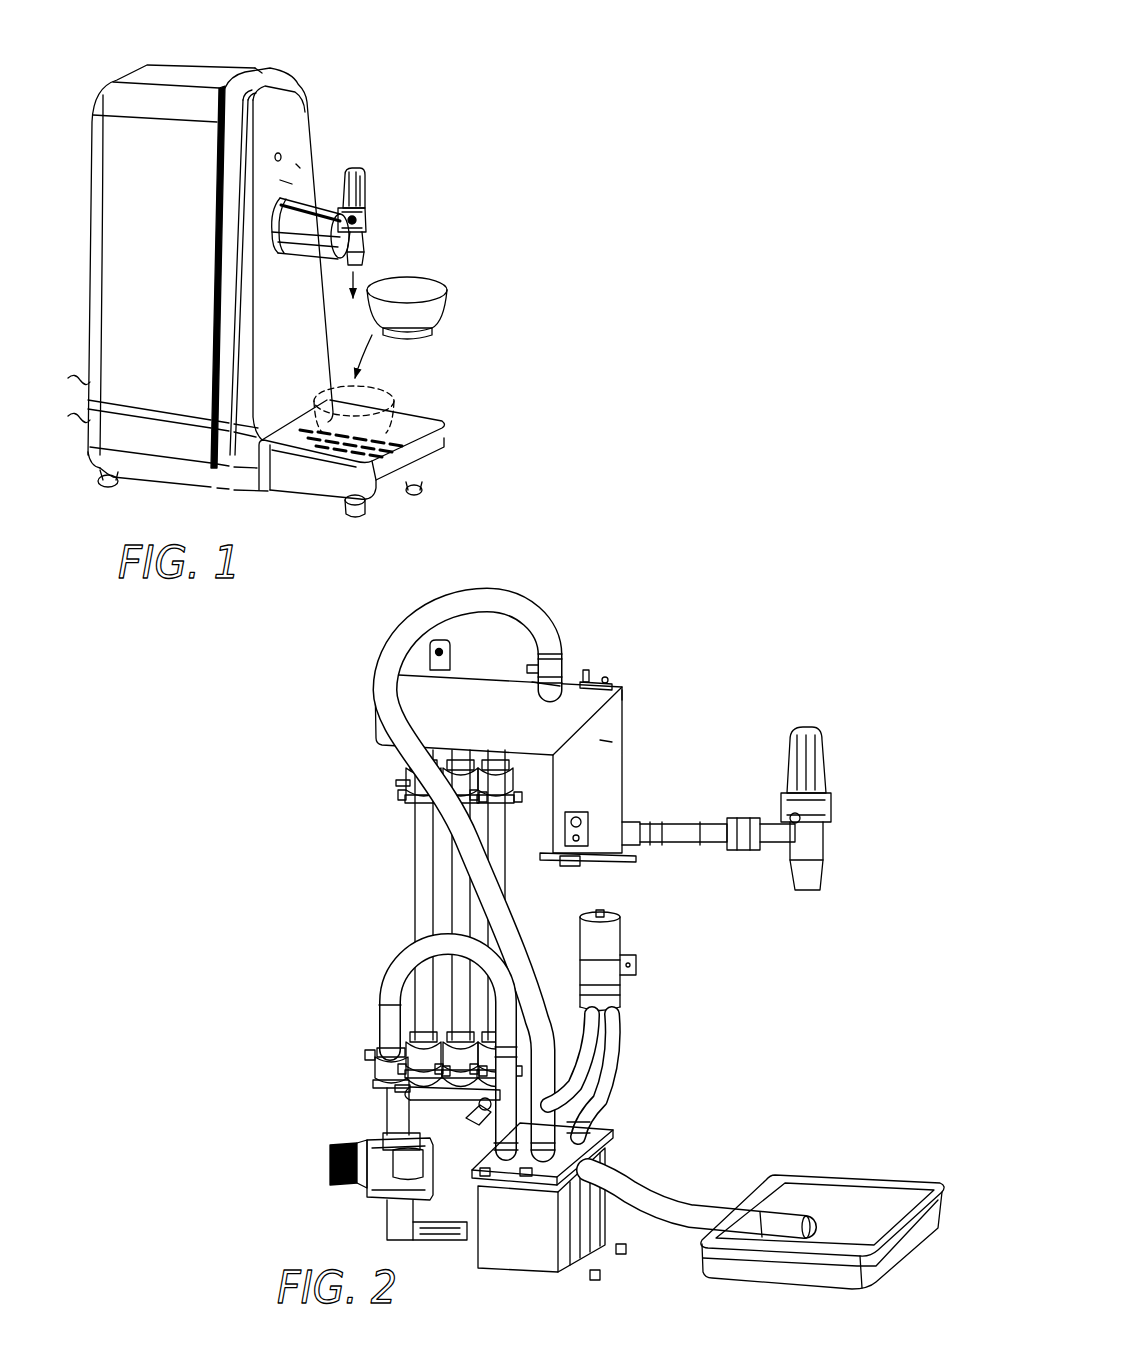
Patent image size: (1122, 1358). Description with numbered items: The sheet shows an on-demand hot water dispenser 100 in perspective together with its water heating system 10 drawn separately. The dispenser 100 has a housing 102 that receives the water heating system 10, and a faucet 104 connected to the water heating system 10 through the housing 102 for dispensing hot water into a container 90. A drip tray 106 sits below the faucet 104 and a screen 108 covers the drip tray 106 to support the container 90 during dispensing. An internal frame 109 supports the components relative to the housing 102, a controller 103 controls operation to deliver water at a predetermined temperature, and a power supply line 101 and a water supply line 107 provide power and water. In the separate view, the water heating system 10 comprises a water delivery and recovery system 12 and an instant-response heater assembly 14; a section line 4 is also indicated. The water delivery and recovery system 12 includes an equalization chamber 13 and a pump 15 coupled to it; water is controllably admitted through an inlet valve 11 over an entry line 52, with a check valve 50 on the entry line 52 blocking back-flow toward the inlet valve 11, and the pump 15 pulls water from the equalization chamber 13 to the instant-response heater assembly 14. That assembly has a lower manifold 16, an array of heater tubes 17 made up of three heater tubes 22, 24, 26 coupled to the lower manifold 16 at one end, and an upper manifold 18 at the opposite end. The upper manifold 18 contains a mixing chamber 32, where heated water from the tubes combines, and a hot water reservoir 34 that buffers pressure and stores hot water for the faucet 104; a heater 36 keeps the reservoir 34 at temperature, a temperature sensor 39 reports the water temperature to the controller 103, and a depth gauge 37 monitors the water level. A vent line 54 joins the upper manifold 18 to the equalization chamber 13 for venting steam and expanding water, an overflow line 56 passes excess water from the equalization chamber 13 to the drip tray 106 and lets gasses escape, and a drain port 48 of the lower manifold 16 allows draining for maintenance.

In FIG. 1, the water heating system 10 is at (128, 140).
In FIG. 2, the water heating system 10 is at (777, 620).
In FIG. 1, the on-demand hot water dispenser 100 is at (442, 122).
In FIG. 1, the power supply line 101 is at (80, 378).
In FIG. 1, the housing 102 is at (262, 58).
In FIG. 1, the controller 103 is at (288, 181).
In FIG. 1, the faucet 104 is at (378, 224).
In FIG. 2, the faucet 104 is at (832, 760).
In FIG. 1, the drip tray 106 is at (410, 504).
In FIG. 2, the drip tray 106 is at (878, 1172).
In FIG. 1, the water supply line 107 is at (82, 420).
In FIG. 1, the screen 108 is at (412, 424).
In FIG. 1, the internal frame 109 is at (300, 160).
In FIG. 1, the container 90 is at (433, 268).
In FIG. 2, the section line 4 is at (322, 707).
In FIG. 2, the inlet valve 11 is at (325, 1142).
In FIG. 2, the water delivery and recovery system 12 is at (285, 1085).
In FIG. 2, the equalization chamber 13 is at (612, 1152).
In FIG. 2, the instant-response heater assembly 14 is at (348, 796).
In FIG. 2, the pump 15 is at (635, 938).
In FIG. 2, the lower manifold 16 is at (442, 1098).
In FIG. 2, the array of heater tubes 17 is at (392, 848).
In FIG. 2, the upper manifold 18 is at (615, 690).
In FIG. 2, the heater tube 22 is at (412, 828).
In FIG. 2, the heater tube 24 is at (448, 879).
In FIG. 2, the heater tube 26 is at (500, 870).
In FIG. 2, the mixing chamber 32 is at (556, 700).
In FIG. 2, the hot water reservoir 34 is at (612, 728).
In FIG. 2, the heater 36 is at (606, 868).
In FIG. 2, the depth gauge 37 is at (608, 676).
In FIG. 2, the temperature sensor 39 is at (588, 812).
In FIG. 2, the drain port 48 is at (468, 1120).
In FIG. 2, the check valve 50 is at (372, 1063).
In FIG. 2, the entry line 52 is at (382, 962).
In FIG. 2, the vent line 54 is at (542, 598).
In FIG. 2, the overflow line 56 is at (714, 1196).